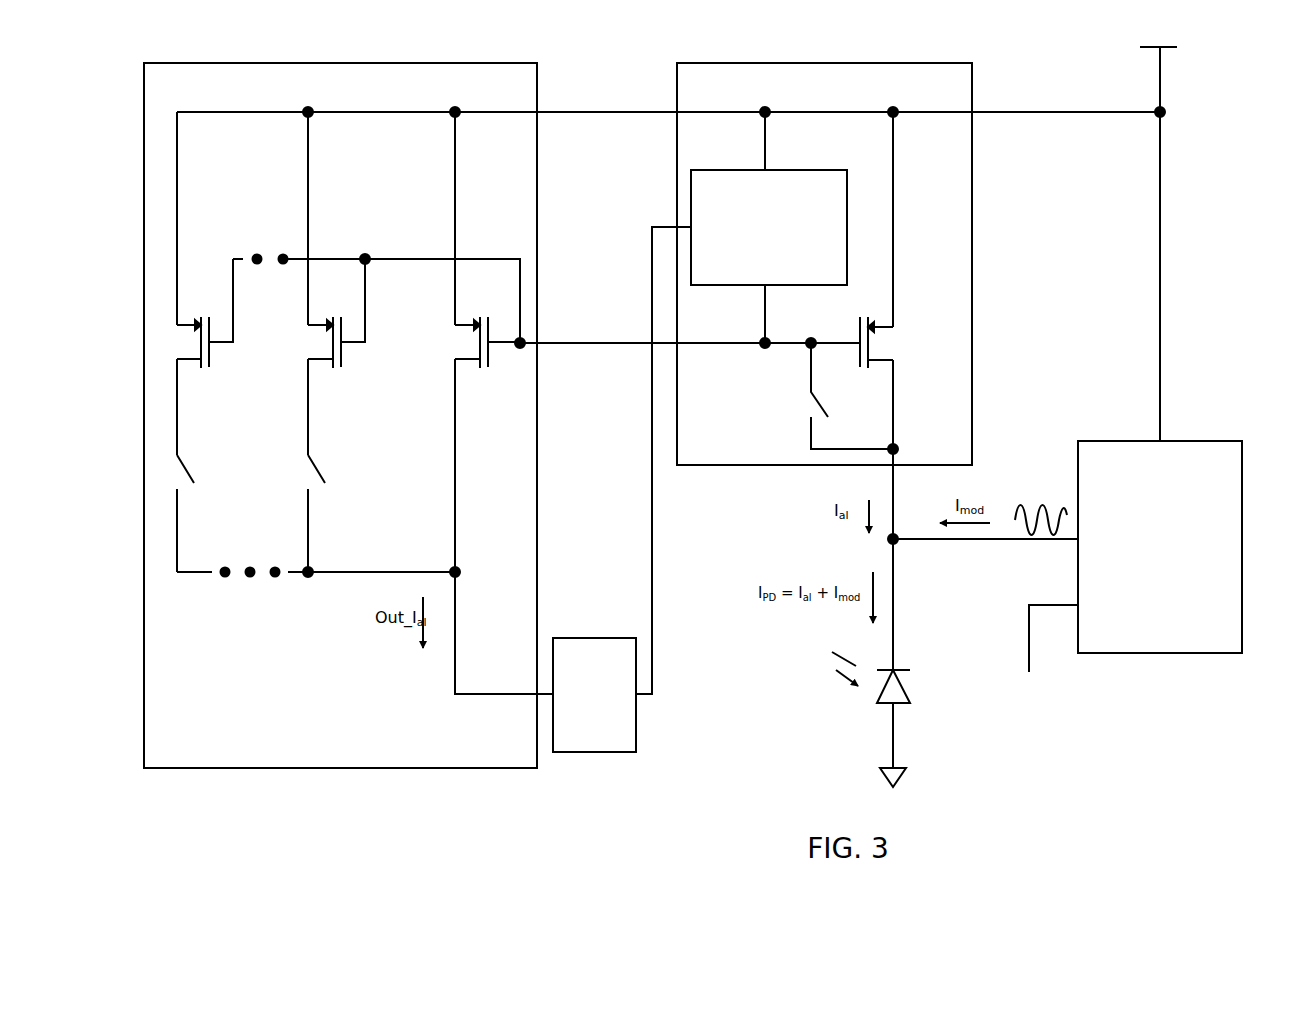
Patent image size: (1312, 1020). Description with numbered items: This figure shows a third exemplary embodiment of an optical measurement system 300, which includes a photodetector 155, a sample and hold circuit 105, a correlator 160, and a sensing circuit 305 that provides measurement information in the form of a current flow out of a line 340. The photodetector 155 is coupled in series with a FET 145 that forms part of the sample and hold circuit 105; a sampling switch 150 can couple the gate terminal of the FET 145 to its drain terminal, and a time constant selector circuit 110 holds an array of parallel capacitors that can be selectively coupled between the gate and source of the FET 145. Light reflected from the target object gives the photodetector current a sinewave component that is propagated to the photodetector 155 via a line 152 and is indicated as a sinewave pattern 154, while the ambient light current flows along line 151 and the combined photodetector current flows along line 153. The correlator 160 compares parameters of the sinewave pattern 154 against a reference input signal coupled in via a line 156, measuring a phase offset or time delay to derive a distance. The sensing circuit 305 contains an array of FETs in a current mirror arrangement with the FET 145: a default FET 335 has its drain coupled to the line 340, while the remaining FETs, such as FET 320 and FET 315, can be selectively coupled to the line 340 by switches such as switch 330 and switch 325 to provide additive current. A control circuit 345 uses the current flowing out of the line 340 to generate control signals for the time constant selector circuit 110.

The optical measurement system 300 is at (1252, 183).
The sensing circuit 305 is at (340, 415).
The sample and hold circuit 105 is at (824, 264).
The time constant selector circuit 110 is at (769, 227).
The FET 145 is at (912, 336).
The sampling switch 150 is at (790, 410).
The ambient light current line 151 is at (895, 511).
The line 152 is at (924, 542).
The photodiode current line 153 is at (896, 580).
The sinewave pattern 154 is at (1044, 495).
The photodetector 155 is at (922, 688).
The line 156 is at (1029, 638).
The correlator 160 is at (1194, 441).
The FET 315 is at (226, 352).
The FET 320 is at (292, 343).
The switch 325 is at (205, 466).
The switch 330 is at (336, 466).
The FET 335 is at (437, 343).
The line 340 is at (458, 612).
The control circuit 345 is at (622, 489).